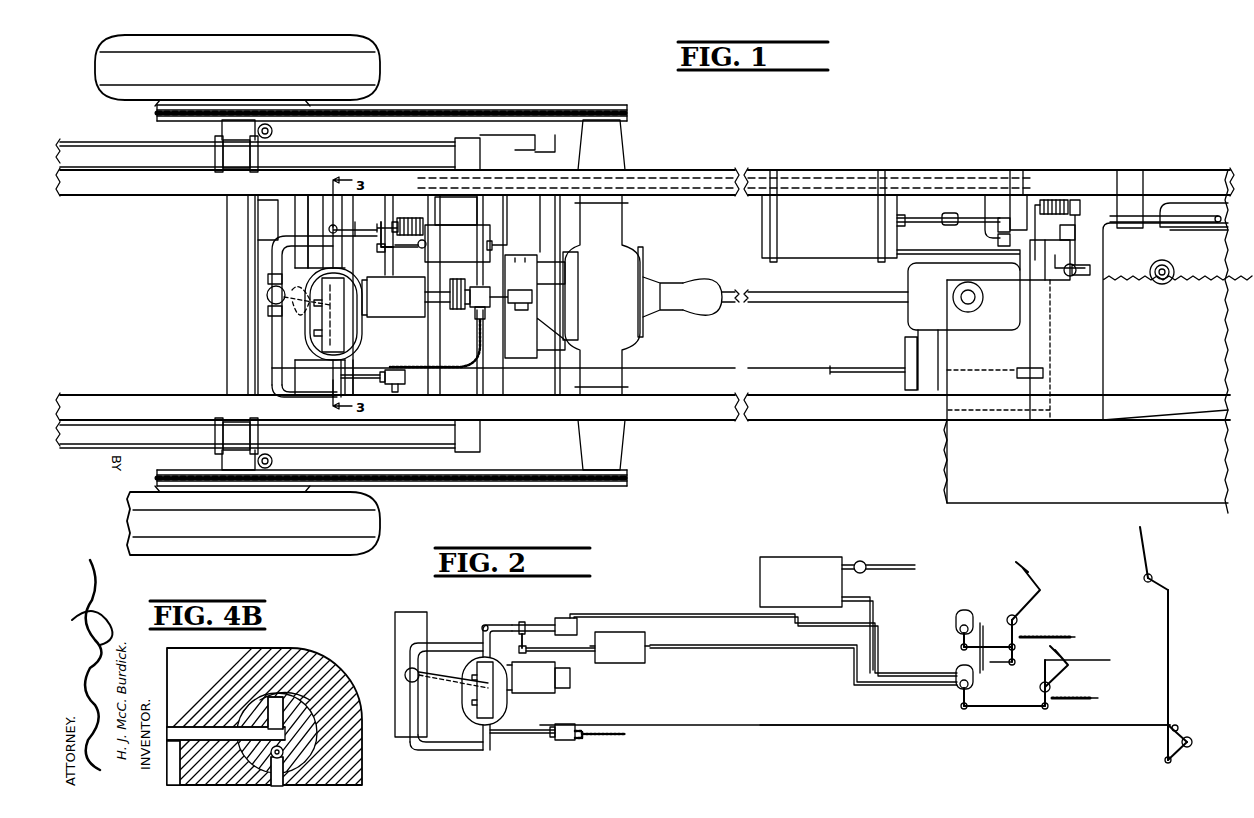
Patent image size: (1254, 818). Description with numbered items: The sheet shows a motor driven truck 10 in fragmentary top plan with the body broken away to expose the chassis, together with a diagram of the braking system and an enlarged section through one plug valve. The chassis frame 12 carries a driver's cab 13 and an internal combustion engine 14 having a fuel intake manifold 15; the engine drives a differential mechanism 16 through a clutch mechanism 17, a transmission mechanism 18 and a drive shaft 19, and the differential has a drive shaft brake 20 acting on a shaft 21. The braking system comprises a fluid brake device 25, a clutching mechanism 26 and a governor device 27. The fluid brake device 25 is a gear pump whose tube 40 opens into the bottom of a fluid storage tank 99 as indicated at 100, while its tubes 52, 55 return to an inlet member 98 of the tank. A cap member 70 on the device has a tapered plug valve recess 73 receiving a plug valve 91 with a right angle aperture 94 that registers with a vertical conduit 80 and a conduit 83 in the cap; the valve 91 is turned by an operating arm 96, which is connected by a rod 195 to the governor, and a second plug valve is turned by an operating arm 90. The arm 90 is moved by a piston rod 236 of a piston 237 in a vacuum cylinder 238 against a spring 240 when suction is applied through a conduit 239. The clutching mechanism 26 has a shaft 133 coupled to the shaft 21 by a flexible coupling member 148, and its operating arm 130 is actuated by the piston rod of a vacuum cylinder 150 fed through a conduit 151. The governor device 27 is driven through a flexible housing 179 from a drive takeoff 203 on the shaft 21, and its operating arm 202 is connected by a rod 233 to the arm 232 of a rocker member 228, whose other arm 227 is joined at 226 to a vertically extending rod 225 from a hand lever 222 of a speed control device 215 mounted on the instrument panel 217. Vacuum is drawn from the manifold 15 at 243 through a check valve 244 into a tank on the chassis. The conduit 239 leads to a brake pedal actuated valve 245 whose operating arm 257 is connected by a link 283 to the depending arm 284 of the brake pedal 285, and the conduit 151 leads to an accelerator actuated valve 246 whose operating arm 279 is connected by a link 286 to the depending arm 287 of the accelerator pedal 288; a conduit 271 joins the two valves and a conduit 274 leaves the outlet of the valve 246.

In FIG. 1, the automobile truck 10 is at (800, 175).
In FIG. 1, the chassis frame 12 is at (795, 422).
In FIG. 1, the driver's cab 13 is at (962, 396).
In FIG. 1, the internal combustion engine 14 is at (1198, 268).
In FIG. 1, the fuel intake manifold 15 is at (1190, 210).
In FIG. 1, the differential mechanism 16 is at (618, 246).
In FIG. 1, the clutch mechanism 17 is at (1040, 272).
In FIG. 1, the transmission mechanism 18 is at (908, 318).
In FIG. 1, the drive shaft 19 is at (818, 298).
In FIG. 1, the drive shaft brake 20 is at (535, 258).
In FIG. 1, the shaft 21 is at (500, 298).
In FIG. 1, the fluid brake device 25 is at (310, 338).
In FIG. 2, the fluid brake device 25 is at (466, 711).
In FIG. 1, the clutching mechanism 26 is at (405, 298).
In FIG. 2, the clutching mechanism 26 is at (540, 680).
In FIG. 1, the governor device 27 is at (412, 382).
In FIG. 2, the governor device 27 is at (565, 737).
In FIG. 1, the tube 40 is at (300, 312).
In FIG. 2, the tube 40 is at (450, 682).
In FIG. 1, the tube 52 is at (290, 245).
In FIG. 2, the tube 52 is at (460, 648).
In FIG. 1, the tube 55 is at (280, 396).
In FIG. 2, the tube 55 is at (423, 742).
In FIG. 4B, the cap member 70 is at (295, 656).
In FIG. 4B, the tapered plug valve recess 73 is at (318, 725).
In FIG. 4B, the vertical conduit 80 is at (276, 775).
In FIG. 4B, the conduit 83 is at (205, 735).
In FIG. 1, the operating arm 90 is at (330, 230).
In FIG. 2, the operating arm 90 is at (484, 628).
In FIG. 4B, the plug valve 91 is at (317, 696).
In FIG. 4B, the right angle aperture 94 is at (257, 735).
In FIG. 1, the operating arm 96 is at (330, 396).
In FIG. 2, the operating arm 96 is at (485, 732).
In FIG. 1, the inlet member 98 is at (266, 293).
In FIG. 2, the inlet member 98 is at (406, 678).
In FIG. 1, the fluid storage tank 99 is at (258, 238).
In FIG. 2, the fluid storage tank 99 is at (395, 636).
In FIG. 1, the tube opening 100 is at (266, 299).
In FIG. 2, the tube opening 100 is at (405, 674).
In FIG. 1, the operating arm 130 is at (380, 250).
In FIG. 2, the operating arm 130 is at (524, 648).
In FIG. 1, the shaft 133 is at (455, 288).
In FIG. 2, the flexible coupling member 148 is at (570, 650).
In FIG. 1, the vacuum cylinder 150 is at (480, 235).
In FIG. 2, the vacuum cylinder 150 is at (625, 660).
In FIG. 1, the conduit 151 is at (508, 212).
In FIG. 2, the conduit 151 is at (738, 645).
In FIG. 1, the flexible housing 179 is at (447, 370).
In FIG. 2, the flexible housing 179 is at (597, 740).
In FIG. 1, the rod 195 is at (372, 372).
In FIG. 2, the rod 195 is at (538, 733).
In FIG. 2, the operating arm 202 is at (555, 730).
In FIG. 1, the drive takeoff 203 is at (476, 288).
In FIG. 1, the speed control device 215 is at (1022, 366).
In FIG. 2, the speed control device 215 is at (1160, 575).
In FIG. 1, the instrument panel 217 is at (1033, 325).
In FIG. 2, the hand lever 222 is at (1146, 545).
In FIG. 2, the vertically extending rod 225 is at (1172, 664).
In FIG. 2, the connection 226 is at (1170, 585).
In FIG. 2, the arm 227 is at (1180, 756).
In FIG. 2, the rocker member 228 is at (1192, 743).
In FIG. 2, the arm 232 is at (1182, 735).
In FIG. 1, the rod 233 is at (738, 368).
In FIG. 2, the rod 233 is at (866, 727).
In FIG. 1, the piston rod 236 is at (357, 222).
In FIG. 2, the piston rod 236 is at (524, 626).
In FIG. 1, the piston 237 is at (398, 220).
In FIG. 1, the vacuum cylinder 238 is at (425, 244).
In FIG. 2, the vacuum cylinder 238 is at (566, 618).
In FIG. 1, the conduit 239 is at (985, 200).
In FIG. 2, the conduit 239 is at (692, 616).
In FIG. 1, the spring 240 is at (425, 226).
In FIG. 1, the manifold connection 243 is at (1216, 230).
In FIG. 1, the check valve 244 is at (950, 214).
In FIG. 2, the check valve 244 is at (860, 562).
In FIG. 1, the brake pedal actuated valve 245 is at (998, 226).
In FIG. 2, the brake pedal actuated valve 245 is at (963, 612).
In FIG. 2, the accelerator actuated valve 246 is at (955, 690).
In FIG. 2, the operating arm 257 is at (960, 655).
In FIG. 1, the conduit 271 is at (1055, 200).
In FIG. 2, the conduit 271 is at (982, 636).
In FIG. 1, the conduit 274 is at (958, 250).
In FIG. 2, the conduit 274 is at (878, 650).
In FIG. 2, the operating arm 279 is at (980, 698).
In FIG. 1, the link 283 is at (998, 240).
In FIG. 2, the link 283 is at (995, 660).
In FIG. 2, the depending arm 284 is at (1020, 626).
In FIG. 2, the brake pedal 285 is at (1030, 572).
In FIG. 1, the link 286 is at (1058, 272).
In FIG. 2, the link 286 is at (1005, 708).
In FIG. 2, the depending arm 287 is at (1048, 703).
In FIG. 2, the accelerator pedal 288 is at (1068, 674).